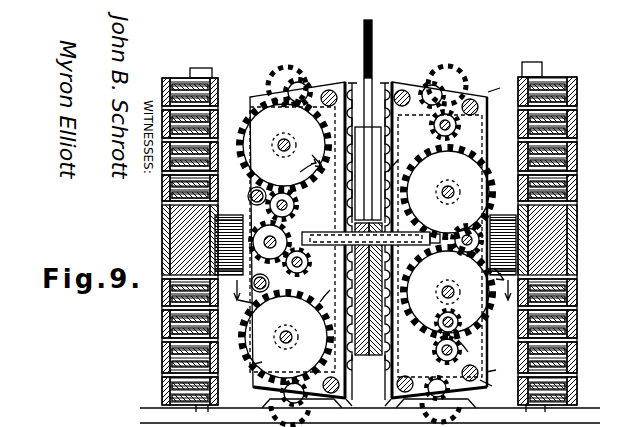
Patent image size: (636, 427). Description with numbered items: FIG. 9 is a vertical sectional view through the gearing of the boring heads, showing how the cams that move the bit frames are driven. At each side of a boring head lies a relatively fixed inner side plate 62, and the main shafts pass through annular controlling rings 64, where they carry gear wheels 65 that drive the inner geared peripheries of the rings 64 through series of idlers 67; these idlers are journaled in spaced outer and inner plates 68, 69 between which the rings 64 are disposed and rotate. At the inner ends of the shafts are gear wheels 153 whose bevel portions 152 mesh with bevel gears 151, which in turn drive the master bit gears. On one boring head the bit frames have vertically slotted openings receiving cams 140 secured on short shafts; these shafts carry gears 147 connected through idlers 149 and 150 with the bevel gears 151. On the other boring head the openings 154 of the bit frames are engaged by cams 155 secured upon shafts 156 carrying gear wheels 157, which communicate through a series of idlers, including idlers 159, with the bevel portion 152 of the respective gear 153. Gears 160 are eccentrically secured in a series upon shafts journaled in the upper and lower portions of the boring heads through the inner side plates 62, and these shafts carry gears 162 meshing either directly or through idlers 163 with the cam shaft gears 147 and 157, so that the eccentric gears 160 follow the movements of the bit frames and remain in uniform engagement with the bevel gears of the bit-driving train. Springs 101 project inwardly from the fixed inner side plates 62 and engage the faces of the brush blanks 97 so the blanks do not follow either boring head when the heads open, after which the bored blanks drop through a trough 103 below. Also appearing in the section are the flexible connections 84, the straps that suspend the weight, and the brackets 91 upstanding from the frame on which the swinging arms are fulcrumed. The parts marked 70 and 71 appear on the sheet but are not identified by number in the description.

The inner side plate 62 is at (262, 100).
The annular controlling ring 64 is at (162, 80).
The gear wheel 65 is at (370, 238).
The idler 67 is at (162, 345).
The outer plate 68 is at (162, 324).
The inner plate 69 is at (253, 367).
The base support 70 is at (190, 78).
The cap 71 is at (200, 68).
The flexible connection 84 is at (376, 42).
The bracket 91 is at (370, 118).
The brush blank 97 is at (366, 352).
The spring 101 is at (371, 239).
The trough 103 is at (368, 381).
The cam 140 is at (480, 248).
The gear 147 is at (480, 160).
The idler 149 is at (478, 140).
The idler 150 is at (402, 162).
The bevel gear 151 is at (577, 168).
The bevel portion 152 is at (236, 215).
The gear wheel 153 is at (590, 268).
The opening 154 is at (284, 145).
The cam 155 is at (318, 162).
The shaft 156 is at (287, 143).
The gear wheel 157 is at (291, 146).
The idler 159 is at (232, 297).
The eccentric gear 160 is at (308, 68).
The gear 162 is at (306, 86).
The idler 163 is at (462, 95).